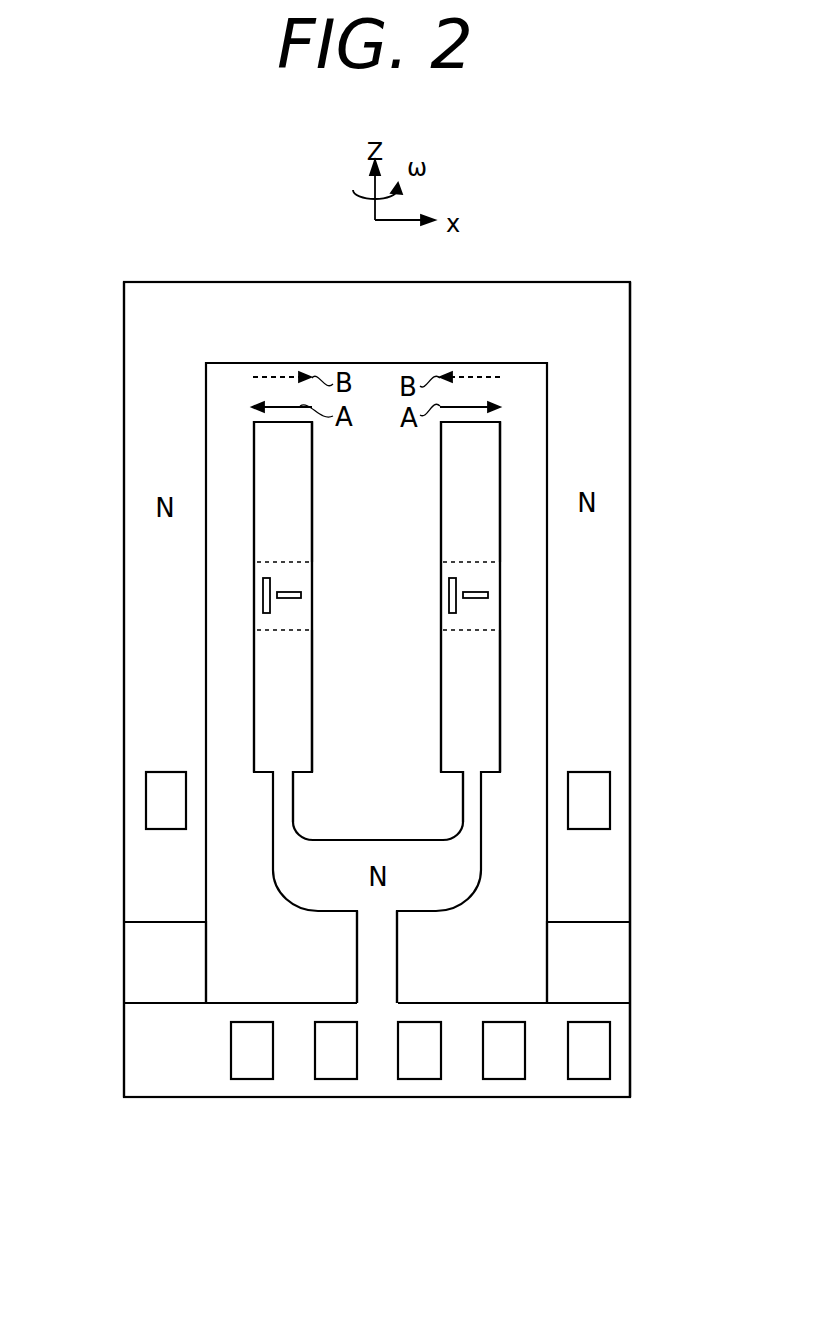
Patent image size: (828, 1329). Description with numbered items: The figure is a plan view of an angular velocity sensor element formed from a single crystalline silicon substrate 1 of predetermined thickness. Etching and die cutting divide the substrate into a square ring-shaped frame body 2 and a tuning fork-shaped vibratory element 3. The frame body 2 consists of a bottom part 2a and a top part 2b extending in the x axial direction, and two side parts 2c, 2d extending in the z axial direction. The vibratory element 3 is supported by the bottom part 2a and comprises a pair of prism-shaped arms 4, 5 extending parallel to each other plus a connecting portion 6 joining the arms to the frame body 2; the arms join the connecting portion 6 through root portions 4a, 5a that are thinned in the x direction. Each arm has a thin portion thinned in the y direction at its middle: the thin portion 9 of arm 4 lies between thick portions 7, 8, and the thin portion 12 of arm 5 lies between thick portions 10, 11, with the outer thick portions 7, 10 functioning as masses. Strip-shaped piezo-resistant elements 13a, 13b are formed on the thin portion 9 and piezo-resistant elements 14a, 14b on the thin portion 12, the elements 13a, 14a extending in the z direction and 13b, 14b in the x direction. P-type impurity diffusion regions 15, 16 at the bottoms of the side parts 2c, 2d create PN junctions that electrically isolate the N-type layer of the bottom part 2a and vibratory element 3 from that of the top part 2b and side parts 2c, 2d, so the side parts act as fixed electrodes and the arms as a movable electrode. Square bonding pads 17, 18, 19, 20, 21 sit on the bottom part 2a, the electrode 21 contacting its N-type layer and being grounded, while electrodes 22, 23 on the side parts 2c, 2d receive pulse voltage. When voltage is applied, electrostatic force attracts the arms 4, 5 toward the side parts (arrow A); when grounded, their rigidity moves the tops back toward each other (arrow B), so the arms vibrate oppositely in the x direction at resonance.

The single crystalline silicon substrate 1 is at (641, 866).
The frame body 2 is at (630, 525).
The bottom part 2a is at (377, 1077).
The top part 2b is at (535, 288).
The side part 2c is at (124, 541).
The side part 2d is at (630, 657).
The tuning fork-shaped vibratory element 3 is at (265, 873).
The arm 4 is at (311, 502).
The root portion 4a is at (284, 802).
The arm 5 is at (500, 510).
The root portion 5a is at (470, 802).
The connecting portion 6 is at (385, 948).
The thick portion 7 is at (300, 456).
The thick portion 8 is at (300, 710).
The thin portion 9 is at (304, 572).
The thick portion 10 is at (483, 470).
The thick portion 11 is at (498, 740).
The thin portion 12 is at (493, 572).
The piezo-resistant element 13a is at (270, 587).
The piezo-resistant element 13b is at (292, 600).
The piezo-resistant element 14a is at (447, 590).
The piezo-resistant element 14b is at (477, 600).
The P-type impurity diffusion region 15 is at (141, 989).
The P-type impurity diffusion region 16 is at (620, 978).
The electrode 17 is at (250, 1068).
The electrode 18 is at (333, 1070).
The electrode 19 is at (418, 1068).
The electrode 20 is at (502, 1068).
The electrode 21 is at (590, 1067).
The electrode 22 is at (146, 805).
The electrode 23 is at (610, 797).